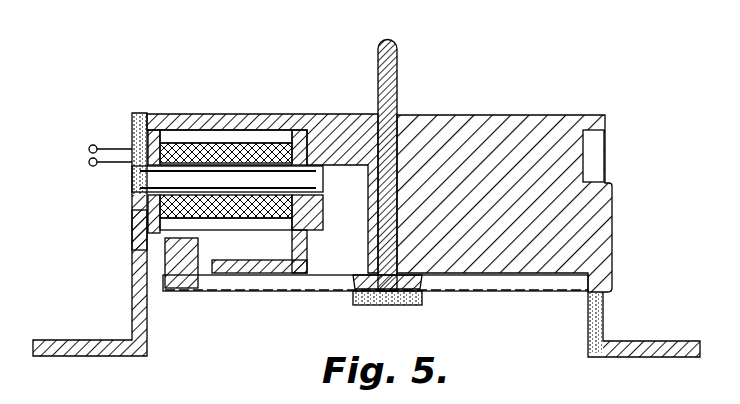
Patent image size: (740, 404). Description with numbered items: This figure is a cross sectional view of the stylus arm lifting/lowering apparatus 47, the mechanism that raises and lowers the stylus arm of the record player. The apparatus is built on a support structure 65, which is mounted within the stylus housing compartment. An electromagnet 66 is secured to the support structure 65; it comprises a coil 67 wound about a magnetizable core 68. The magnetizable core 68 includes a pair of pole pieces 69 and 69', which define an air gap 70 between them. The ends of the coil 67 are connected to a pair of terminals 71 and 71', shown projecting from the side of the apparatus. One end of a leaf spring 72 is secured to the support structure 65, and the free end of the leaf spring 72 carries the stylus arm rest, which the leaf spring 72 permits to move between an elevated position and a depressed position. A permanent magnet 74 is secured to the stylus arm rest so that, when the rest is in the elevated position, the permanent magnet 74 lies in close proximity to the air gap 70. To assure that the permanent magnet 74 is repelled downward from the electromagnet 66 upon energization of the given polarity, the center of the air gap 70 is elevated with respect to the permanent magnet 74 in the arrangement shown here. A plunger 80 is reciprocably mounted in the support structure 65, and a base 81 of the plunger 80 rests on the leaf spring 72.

The stylus arm lifting/lowering apparatus 47 is at (540, 77).
The support structure 65 is at (477, 97).
The electromagnet 66 is at (360, 266).
The coil 67 is at (197, 147).
The magnetizable core 68 is at (305, 178).
The pole piece 69 is at (259, 251).
The pole piece 69' is at (117, 231).
The air gap 70 is at (153, 273).
The terminal 71 is at (96, 135).
The terminal 71' is at (92, 169).
The leaf spring 72 is at (514, 297).
The permanent magnet 74 is at (198, 252).
The plunger 80 is at (397, 63).
The base 81 is at (410, 300).